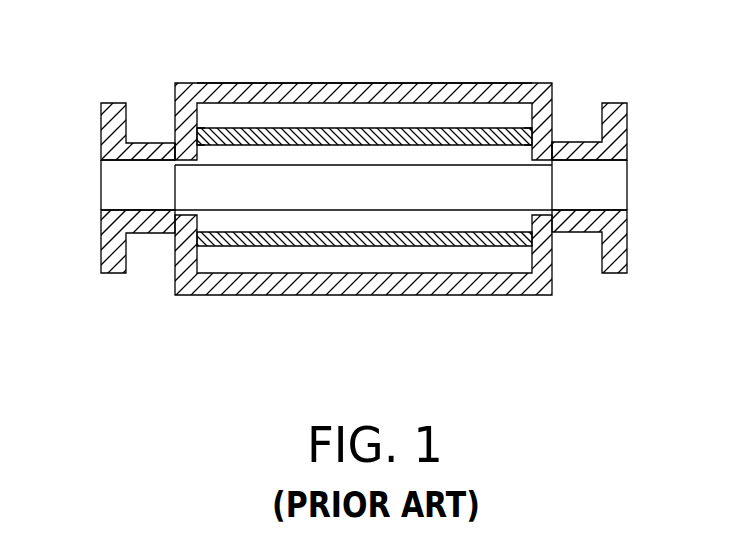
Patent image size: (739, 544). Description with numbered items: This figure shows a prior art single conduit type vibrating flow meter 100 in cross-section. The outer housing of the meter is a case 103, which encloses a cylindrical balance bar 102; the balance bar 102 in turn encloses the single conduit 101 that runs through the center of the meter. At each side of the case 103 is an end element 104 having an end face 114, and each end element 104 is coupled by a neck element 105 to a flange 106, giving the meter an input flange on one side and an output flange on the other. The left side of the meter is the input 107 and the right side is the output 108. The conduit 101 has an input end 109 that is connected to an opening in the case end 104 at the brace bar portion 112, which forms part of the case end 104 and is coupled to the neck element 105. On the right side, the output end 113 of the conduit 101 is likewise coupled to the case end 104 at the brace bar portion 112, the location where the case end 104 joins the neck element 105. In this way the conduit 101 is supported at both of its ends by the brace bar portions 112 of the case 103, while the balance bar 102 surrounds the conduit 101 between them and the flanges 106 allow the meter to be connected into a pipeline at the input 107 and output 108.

The vibrating flow meter 100 is at (400, 53).
The conduit 101 is at (346, 203).
The balance bar 102 is at (318, 131).
The case 103 is at (467, 83).
The end element 104 is at (177, 95).
The neck element 105 is at (167, 143).
The flange 106 is at (101, 103).
The input 107 is at (110, 187).
The output 108 is at (607, 187).
The input end 109 is at (176, 197).
The brace bar portion 112 is at (198, 148).
The output end 113 is at (553, 197).
The end face 114 is at (200, 128).